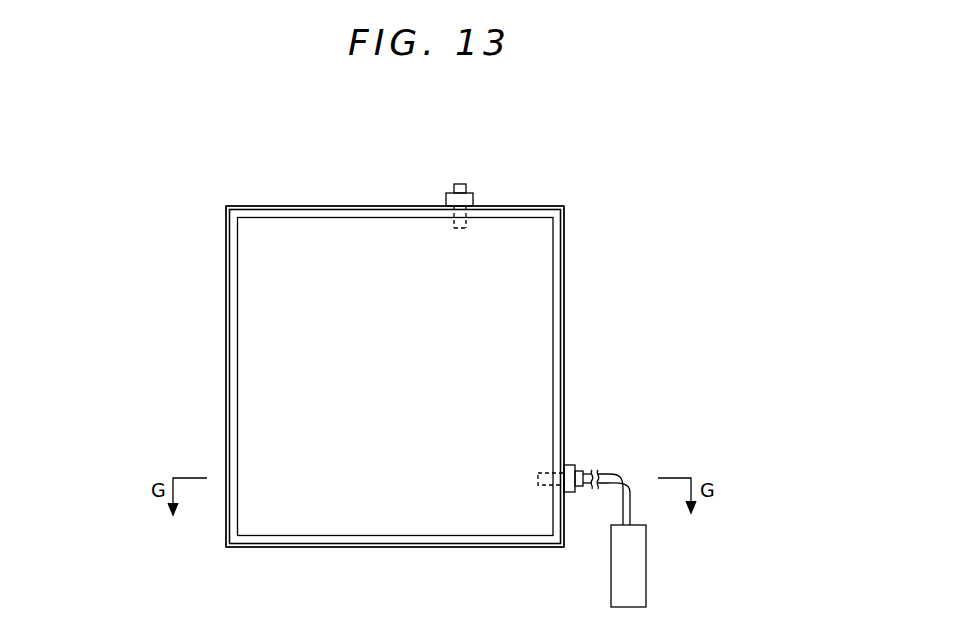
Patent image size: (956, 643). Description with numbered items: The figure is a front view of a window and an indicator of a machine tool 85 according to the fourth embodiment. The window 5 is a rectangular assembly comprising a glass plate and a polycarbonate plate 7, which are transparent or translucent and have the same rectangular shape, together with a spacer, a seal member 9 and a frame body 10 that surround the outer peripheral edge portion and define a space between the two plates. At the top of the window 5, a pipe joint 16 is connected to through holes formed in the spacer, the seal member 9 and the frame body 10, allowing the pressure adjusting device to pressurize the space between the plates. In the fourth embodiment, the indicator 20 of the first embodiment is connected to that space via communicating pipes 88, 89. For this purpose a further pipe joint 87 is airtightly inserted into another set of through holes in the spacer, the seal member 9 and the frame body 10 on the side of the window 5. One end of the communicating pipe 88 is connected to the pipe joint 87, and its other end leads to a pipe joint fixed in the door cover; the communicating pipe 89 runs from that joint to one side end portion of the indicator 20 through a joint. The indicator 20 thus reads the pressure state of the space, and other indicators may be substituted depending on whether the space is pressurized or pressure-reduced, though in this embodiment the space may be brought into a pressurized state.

The machine tool 85 is at (155, 339).
The window 5 is at (305, 196).
The seal member 9 is at (560, 273).
The frame body 10 is at (564, 330).
The polycarbonate plate 7 is at (266, 378).
The pipe joint 16 is at (450, 194).
The pipe joint 87 is at (571, 465).
The communicating pipe 88 is at (588, 472).
The communicating pipe 89 is at (625, 478).
The indicator 20 is at (612, 585).